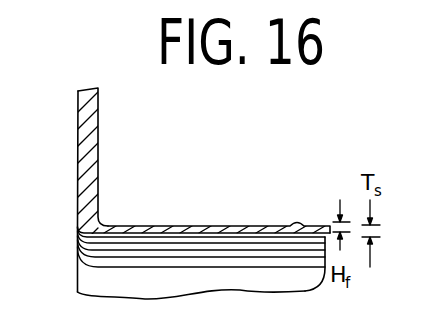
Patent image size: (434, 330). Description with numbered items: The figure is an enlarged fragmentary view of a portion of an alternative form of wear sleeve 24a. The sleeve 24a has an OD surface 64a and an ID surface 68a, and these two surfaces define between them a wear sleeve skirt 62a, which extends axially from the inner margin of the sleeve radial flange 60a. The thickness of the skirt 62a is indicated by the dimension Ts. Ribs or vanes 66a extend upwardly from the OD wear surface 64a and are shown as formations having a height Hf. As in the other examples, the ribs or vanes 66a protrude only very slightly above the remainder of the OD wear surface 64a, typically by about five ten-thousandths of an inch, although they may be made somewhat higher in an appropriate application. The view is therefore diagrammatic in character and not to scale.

The wear sleeve 24a is at (107, 147).
The sleeve radial flange 60a is at (78, 132).
The wear sleeve skirt 62a is at (199, 228).
The OD surface 64a is at (128, 225).
The ribs or vanes 66a is at (253, 226).
The ID surface 68a is at (273, 237).